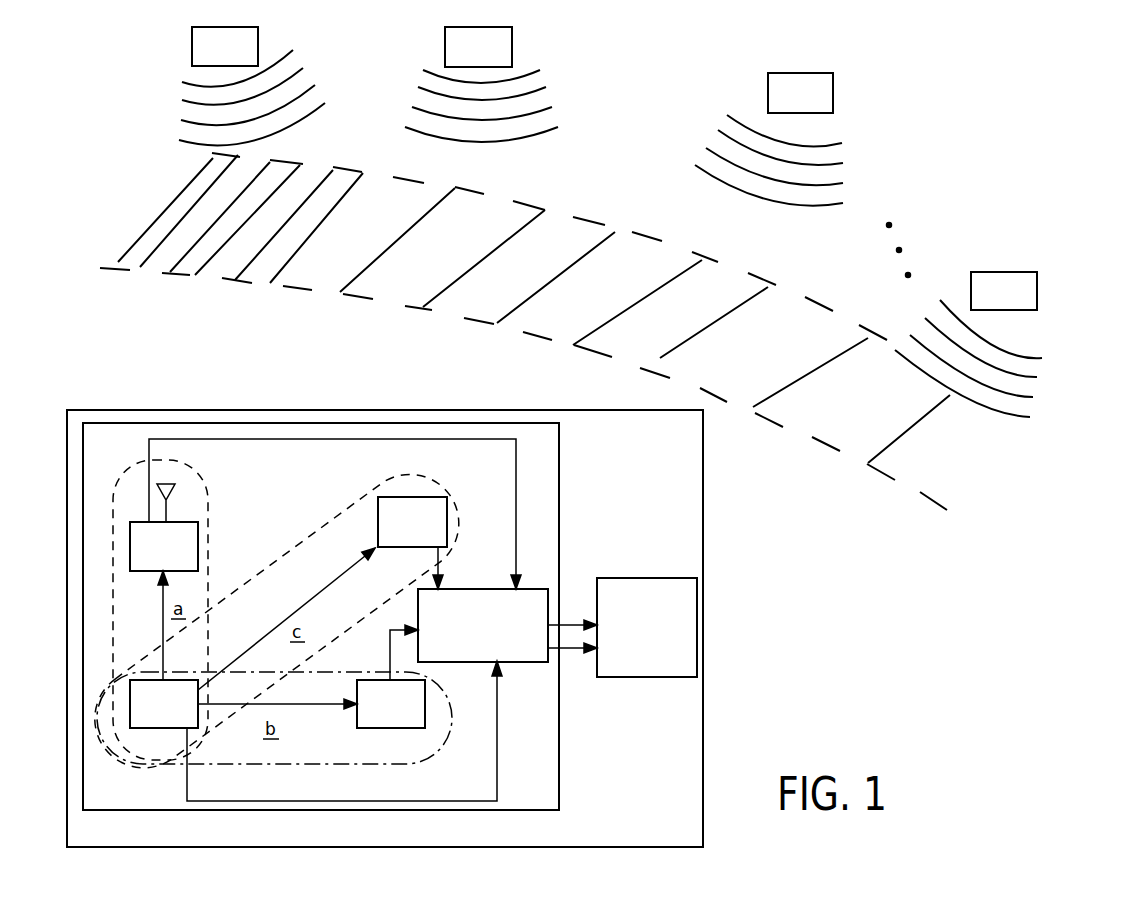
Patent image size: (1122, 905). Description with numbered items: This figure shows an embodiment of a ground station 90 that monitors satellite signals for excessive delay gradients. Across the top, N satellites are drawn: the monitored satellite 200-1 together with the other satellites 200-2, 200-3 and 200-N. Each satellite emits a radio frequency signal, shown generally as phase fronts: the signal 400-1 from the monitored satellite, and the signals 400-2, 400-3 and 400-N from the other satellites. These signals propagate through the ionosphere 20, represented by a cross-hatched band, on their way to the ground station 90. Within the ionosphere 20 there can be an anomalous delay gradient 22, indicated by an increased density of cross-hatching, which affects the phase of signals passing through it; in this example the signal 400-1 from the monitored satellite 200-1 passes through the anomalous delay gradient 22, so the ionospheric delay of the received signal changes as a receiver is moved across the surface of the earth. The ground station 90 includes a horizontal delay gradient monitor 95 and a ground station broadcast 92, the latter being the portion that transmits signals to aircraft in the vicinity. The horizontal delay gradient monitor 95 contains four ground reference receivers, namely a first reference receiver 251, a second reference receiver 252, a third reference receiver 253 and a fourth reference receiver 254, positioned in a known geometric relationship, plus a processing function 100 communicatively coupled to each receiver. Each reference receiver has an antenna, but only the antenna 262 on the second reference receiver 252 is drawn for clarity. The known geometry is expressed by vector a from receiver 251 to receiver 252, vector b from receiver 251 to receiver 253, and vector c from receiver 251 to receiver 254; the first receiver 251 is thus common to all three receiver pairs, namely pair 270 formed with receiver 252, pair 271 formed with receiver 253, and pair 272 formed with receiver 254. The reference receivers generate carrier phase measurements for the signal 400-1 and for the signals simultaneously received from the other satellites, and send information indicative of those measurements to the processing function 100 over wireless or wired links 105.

The monitored satellite 200-1 is at (225, 46).
The other satellite 200-2 is at (478, 47).
The other satellite 200-3 is at (800, 93).
The Nth satellite 200-N is at (1004, 291).
The radio frequency signal 400-1 is at (172, 77).
The radio frequency signal 400-2 is at (552, 65).
The radio frequency signal 400-3 is at (849, 143).
The radio frequency signal 400-N is at (1048, 360).
The ionosphere 20 is at (525, 331).
The anomalous delay gradient 22 is at (272, 297).
The ground station 90 is at (229, 838).
The horizontal delay gradient monitor 95 is at (560, 558).
The processing function 100 is at (498, 656).
The ground station broadcast 92 is at (660, 671).
The wireless or wired links 105 is at (517, 512).
The antenna 262 is at (157, 497).
The reference receiver pair 270 is at (208, 498).
The reference receiver pair 271 is at (255, 765).
The reference receiver pair 272 is at (463, 493).
The first reference receiver 251 is at (170, 730).
The second reference receiver 252 is at (198, 553).
The third reference receiver 253 is at (405, 730).
The fourth reference receiver 254 is at (405, 548).